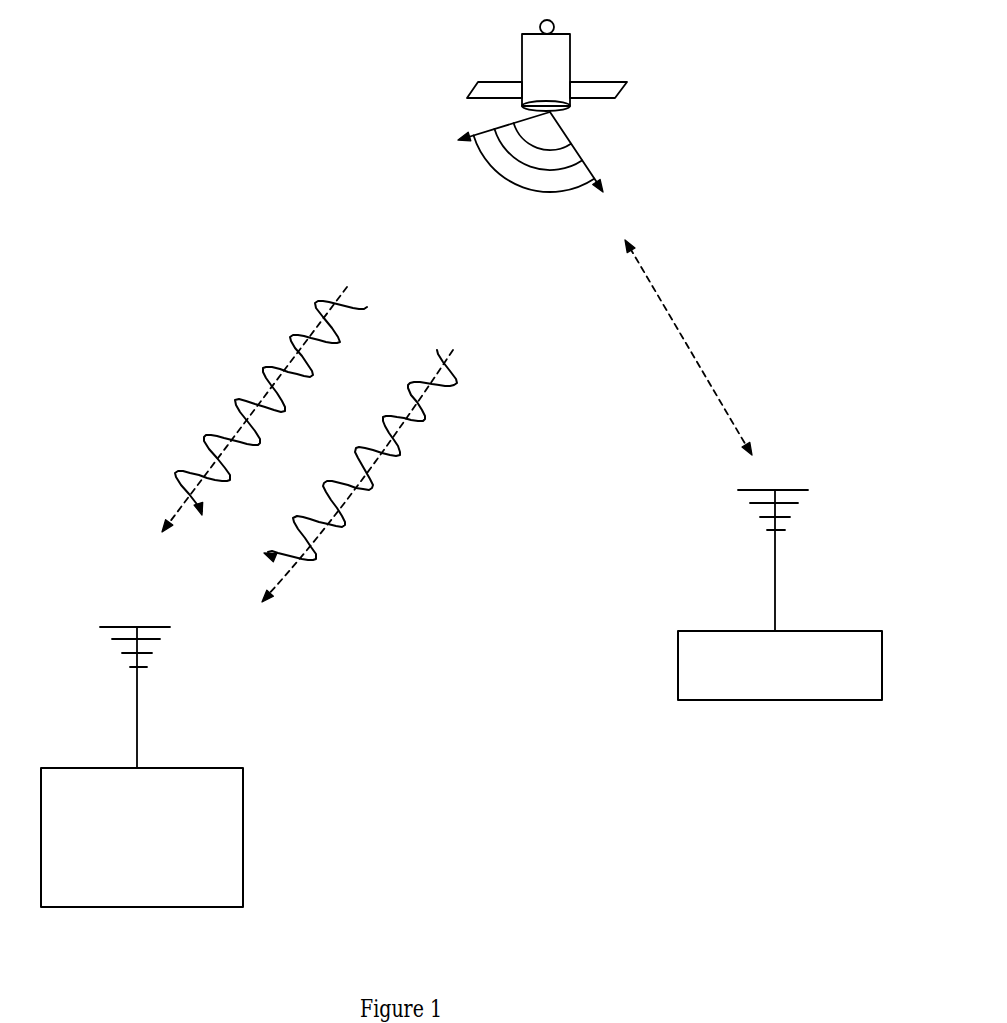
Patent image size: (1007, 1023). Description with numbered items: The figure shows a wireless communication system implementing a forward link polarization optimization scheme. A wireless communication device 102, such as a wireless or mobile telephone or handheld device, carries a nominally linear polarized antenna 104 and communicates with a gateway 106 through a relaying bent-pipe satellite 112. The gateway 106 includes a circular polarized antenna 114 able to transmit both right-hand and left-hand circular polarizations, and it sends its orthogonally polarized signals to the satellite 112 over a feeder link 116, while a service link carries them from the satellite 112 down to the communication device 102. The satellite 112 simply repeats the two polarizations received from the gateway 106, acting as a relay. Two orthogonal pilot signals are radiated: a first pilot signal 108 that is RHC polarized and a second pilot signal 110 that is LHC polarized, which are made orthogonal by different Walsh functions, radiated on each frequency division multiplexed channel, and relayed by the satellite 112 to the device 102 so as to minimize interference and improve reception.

The wireless communication device 102 is at (163, 806).
The nominally linear polarized antenna 104 is at (108, 697).
The gateway 106 is at (801, 634).
The first pilot signal 108 is at (390, 476).
The second pilot signal 110 is at (264, 409).
The relaying satellite 112 is at (554, 106).
The circular polarized antenna 114 is at (788, 560).
The feeder link 116 is at (688, 347).